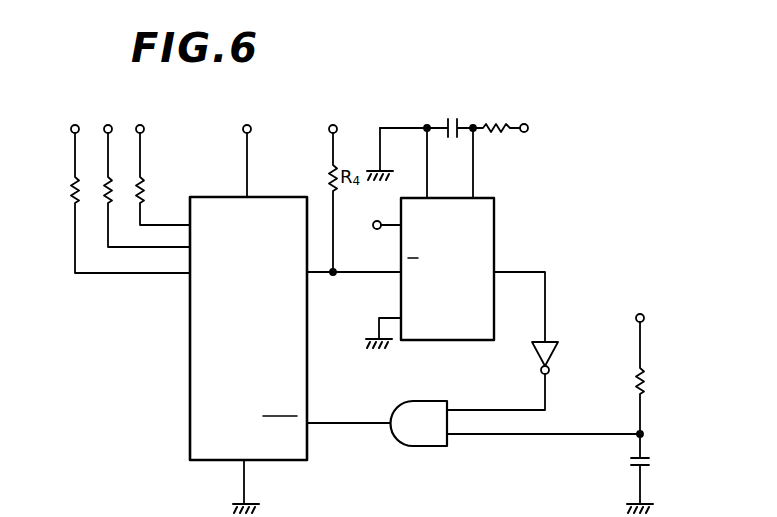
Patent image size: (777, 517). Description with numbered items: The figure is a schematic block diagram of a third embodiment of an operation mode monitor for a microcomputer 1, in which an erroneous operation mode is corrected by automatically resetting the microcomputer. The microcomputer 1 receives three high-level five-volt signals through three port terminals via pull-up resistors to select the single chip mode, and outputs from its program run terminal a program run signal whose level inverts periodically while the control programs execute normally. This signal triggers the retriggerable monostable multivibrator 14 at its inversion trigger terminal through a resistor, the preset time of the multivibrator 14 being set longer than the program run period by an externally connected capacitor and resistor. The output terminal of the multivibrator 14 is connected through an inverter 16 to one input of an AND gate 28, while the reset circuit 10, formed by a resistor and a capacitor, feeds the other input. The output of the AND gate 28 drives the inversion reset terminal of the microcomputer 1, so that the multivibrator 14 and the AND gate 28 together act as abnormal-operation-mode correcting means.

The microcomputer 1 is at (277, 197).
The reset circuit 10 is at (627, 442).
The retriggerable monostable multivibrator 14 is at (494, 208).
The inverter 16 is at (556, 352).
The AND gate 28 is at (430, 446).